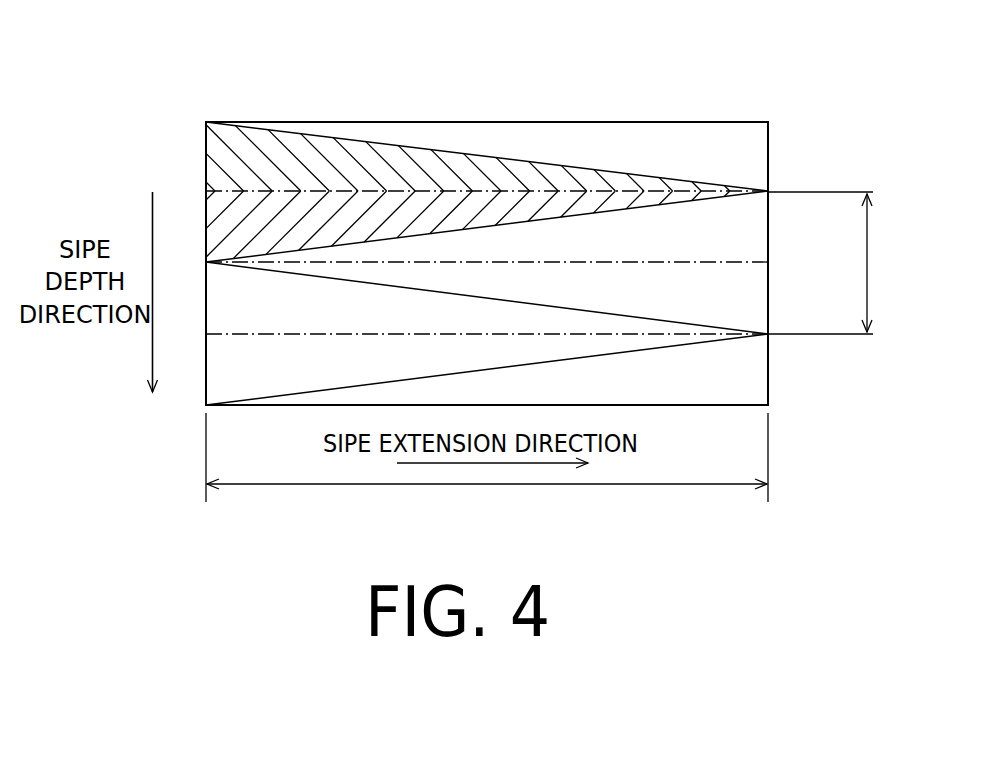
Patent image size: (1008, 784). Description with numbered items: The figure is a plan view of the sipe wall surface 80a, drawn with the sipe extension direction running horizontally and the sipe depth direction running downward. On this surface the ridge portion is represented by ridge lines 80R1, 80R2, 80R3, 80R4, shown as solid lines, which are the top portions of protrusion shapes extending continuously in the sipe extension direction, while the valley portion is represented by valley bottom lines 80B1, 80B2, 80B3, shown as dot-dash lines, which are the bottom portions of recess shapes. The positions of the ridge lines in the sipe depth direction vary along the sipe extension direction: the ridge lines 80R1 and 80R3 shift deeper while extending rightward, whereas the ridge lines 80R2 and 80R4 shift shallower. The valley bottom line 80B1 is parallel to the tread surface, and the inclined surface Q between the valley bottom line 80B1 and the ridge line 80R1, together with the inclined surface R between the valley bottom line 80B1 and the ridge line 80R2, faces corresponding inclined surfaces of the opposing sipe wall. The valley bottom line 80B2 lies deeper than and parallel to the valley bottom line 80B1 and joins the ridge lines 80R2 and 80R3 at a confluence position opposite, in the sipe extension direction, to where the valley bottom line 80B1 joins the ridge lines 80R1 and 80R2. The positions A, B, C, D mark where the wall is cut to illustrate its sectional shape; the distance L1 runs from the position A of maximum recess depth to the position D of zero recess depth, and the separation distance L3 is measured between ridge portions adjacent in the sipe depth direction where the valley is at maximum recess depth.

The sipe wall surface 80a is at (779, 149).
The valley bottom line 80B1 is at (277, 190).
The valley bottom line 80B2 is at (668, 263).
The valley bottom line 80B3 is at (237, 336).
The ridge line 80R1 is at (495, 157).
The ridge line 80R2 is at (626, 210).
The ridge line 80R3 is at (627, 312).
The ridge line 80R4 is at (623, 353).
The inclined surface Q is at (422, 166).
The inclined surface R is at (212, 236).
The distance L1 is at (487, 466).
The separation distance L3 is at (836, 263).
The position A is at (212, 103).
The position B is at (463, 103).
The position C is at (697, 105).
The position D is at (766, 105).